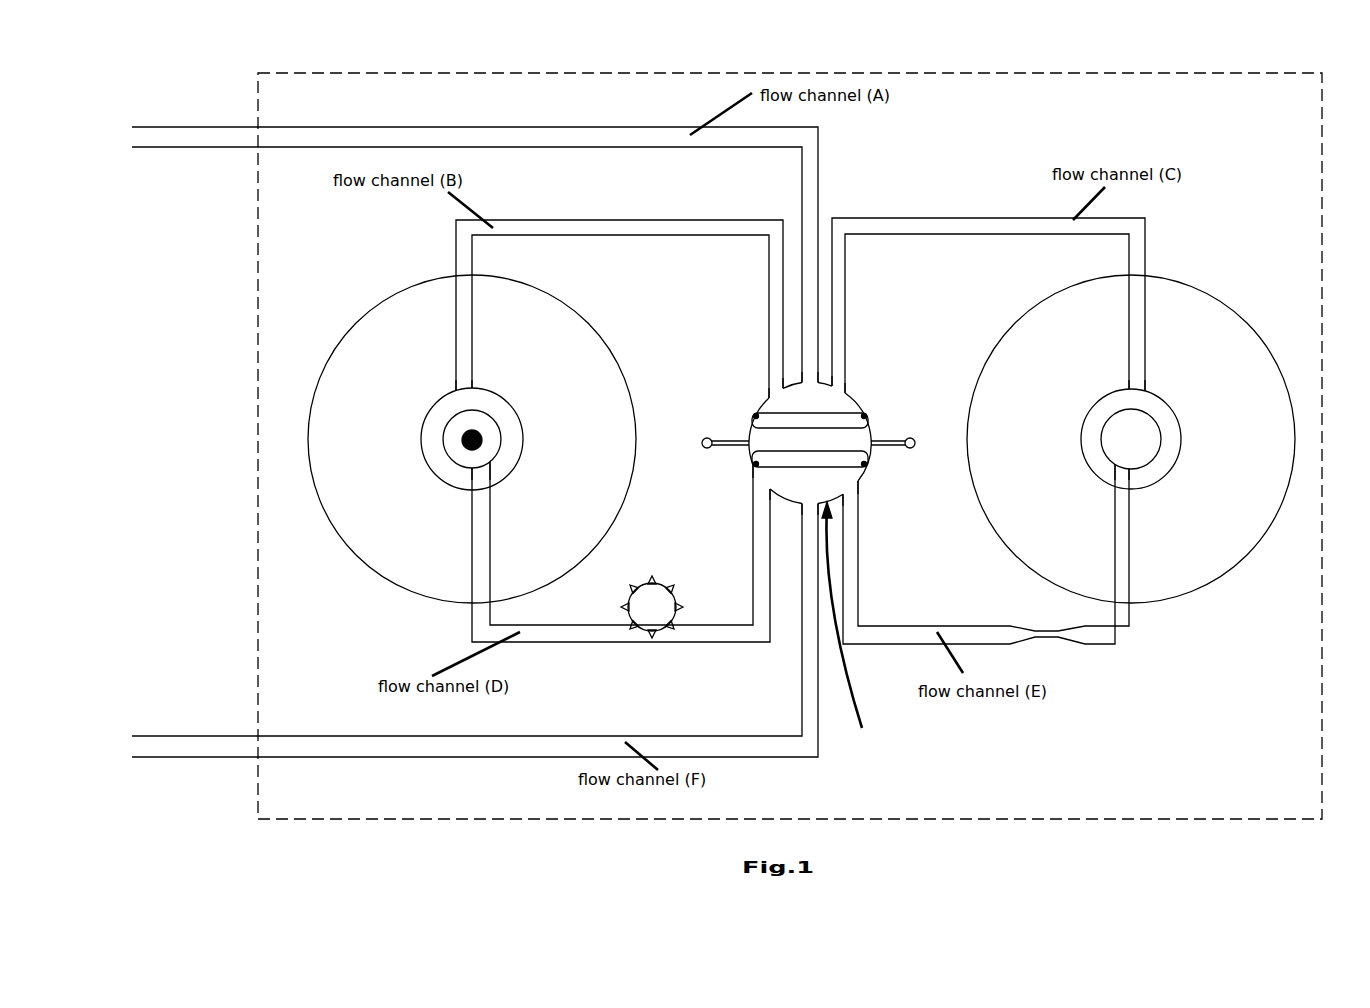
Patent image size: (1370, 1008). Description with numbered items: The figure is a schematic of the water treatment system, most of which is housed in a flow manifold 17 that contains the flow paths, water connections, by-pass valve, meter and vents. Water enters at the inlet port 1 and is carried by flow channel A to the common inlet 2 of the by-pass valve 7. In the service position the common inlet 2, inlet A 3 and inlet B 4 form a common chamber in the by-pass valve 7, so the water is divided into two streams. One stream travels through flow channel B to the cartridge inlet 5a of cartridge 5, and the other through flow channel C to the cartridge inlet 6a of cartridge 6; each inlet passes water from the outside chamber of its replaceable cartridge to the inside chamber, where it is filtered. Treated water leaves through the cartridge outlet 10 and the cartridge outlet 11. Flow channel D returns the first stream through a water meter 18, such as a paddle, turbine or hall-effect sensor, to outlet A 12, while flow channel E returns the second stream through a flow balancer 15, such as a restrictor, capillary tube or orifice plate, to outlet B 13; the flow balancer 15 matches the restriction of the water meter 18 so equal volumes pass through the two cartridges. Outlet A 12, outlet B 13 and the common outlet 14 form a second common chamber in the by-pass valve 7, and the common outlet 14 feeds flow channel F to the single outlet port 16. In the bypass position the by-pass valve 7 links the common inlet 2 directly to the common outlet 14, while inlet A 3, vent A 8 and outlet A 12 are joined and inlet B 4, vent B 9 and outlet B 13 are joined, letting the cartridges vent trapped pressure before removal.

The inlet port 1 is at (221, 138).
The common inlet 2 is at (810, 382).
The inlet A 3 is at (777, 388).
The inlet B 4 is at (835, 385).
The cartridge 5 is at (331, 353).
The cartridge inlet 5a is at (462, 392).
The cartridge 6 is at (1253, 327).
The cartridge inlet 6a is at (1136, 394).
The by-pass valve 7 is at (899, 628).
The vent A 8 is at (706, 437).
The vent B 9 is at (909, 437).
The cartridge outlet 10 is at (480, 468).
The cartridge outlet 11 is at (1124, 466).
The outlet A 12 is at (762, 483).
The outlet B 13 is at (851, 486).
The common outlet 14 is at (811, 498).
The flow balancer 15 is at (1043, 635).
The outlet port 16 is at (185, 748).
The flow manifold 17 is at (1102, 73).
The water meter 18 is at (648, 610).